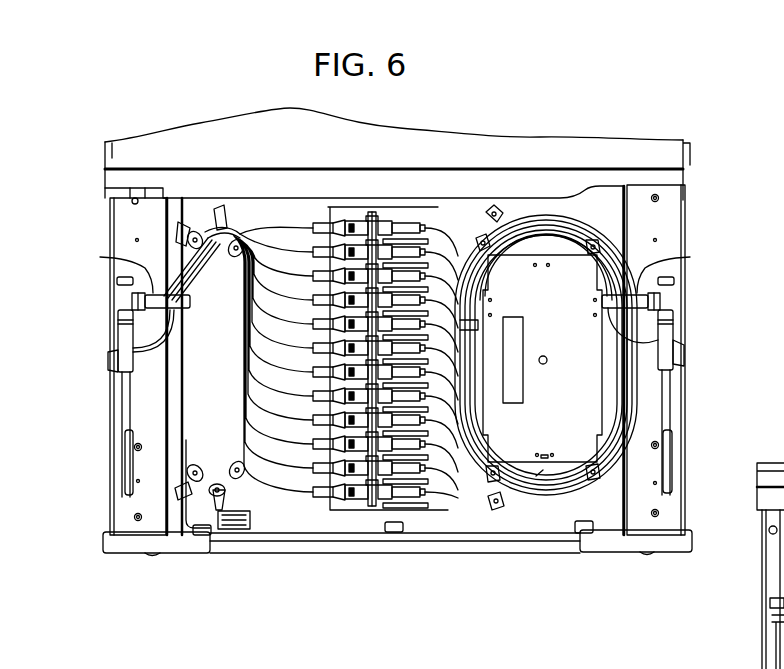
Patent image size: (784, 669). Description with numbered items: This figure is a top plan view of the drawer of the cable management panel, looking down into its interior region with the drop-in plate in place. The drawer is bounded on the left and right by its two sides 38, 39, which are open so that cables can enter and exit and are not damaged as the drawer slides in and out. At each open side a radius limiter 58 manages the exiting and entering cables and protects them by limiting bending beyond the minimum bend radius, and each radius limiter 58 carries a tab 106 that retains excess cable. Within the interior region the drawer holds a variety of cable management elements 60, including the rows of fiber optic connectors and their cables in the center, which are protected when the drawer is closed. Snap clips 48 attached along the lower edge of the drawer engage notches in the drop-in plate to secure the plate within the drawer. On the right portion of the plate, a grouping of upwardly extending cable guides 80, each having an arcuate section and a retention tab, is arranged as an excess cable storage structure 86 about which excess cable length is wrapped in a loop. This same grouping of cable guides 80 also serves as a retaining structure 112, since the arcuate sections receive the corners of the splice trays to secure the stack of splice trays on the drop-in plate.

The side 38 is at (108, 416).
The side 39 is at (690, 393).
The snap clip 48 is at (211, 540).
The radius limiter 58 is at (104, 258).
The cable management elements 60 is at (238, 207).
The cable guide 80 is at (482, 236).
The excess cable storage structure 86 is at (546, 276).
The retaining structure 112 is at (522, 198).
The tab 106 is at (185, 303).